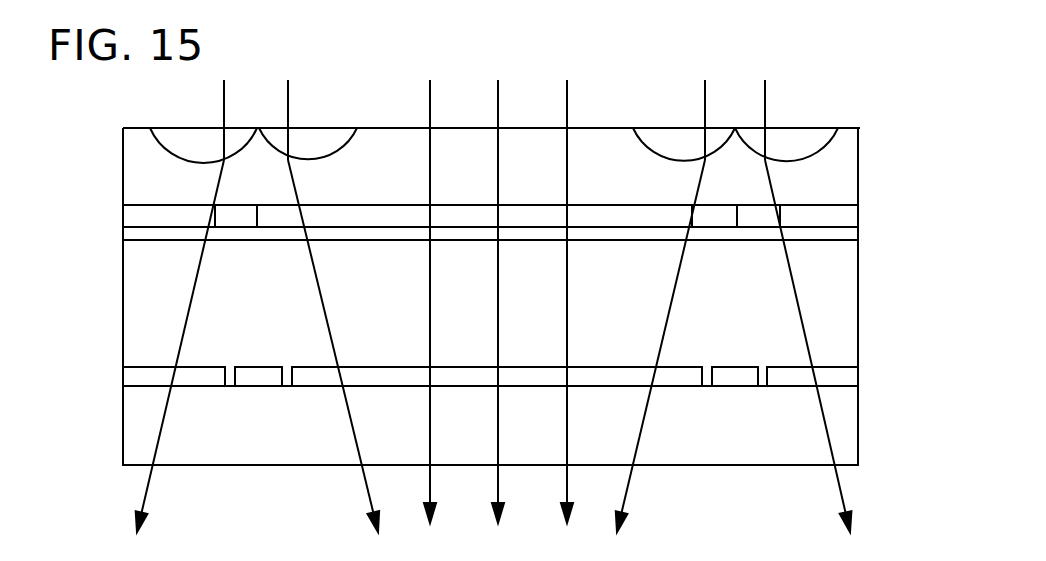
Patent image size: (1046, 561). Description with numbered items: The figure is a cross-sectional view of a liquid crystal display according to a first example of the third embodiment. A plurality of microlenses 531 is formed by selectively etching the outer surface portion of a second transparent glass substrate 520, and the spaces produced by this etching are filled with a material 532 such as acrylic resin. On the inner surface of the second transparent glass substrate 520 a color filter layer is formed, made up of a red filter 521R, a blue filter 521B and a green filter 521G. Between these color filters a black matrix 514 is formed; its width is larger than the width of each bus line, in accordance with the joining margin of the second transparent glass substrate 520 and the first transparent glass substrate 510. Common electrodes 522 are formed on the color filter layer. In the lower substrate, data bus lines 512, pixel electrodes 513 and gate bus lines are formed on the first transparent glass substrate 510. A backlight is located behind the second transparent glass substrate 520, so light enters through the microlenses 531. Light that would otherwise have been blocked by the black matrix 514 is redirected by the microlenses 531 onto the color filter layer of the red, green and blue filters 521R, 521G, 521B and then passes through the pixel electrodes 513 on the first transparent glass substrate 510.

The first transparent glass substrate 510 is at (223, 447).
The data bus lines 512 is at (260, 378).
The pixel electrodes 513 is at (382, 378).
The black matrix 514 is at (238, 218).
The second transparent glass substrate 520 is at (133, 148).
The red filter 521R is at (138, 213).
The green filter 521G is at (460, 200).
The blue filter 521B is at (808, 215).
The common electrodes 522 is at (830, 233).
The microlenses 531 is at (340, 152).
The material 532 is at (663, 143).